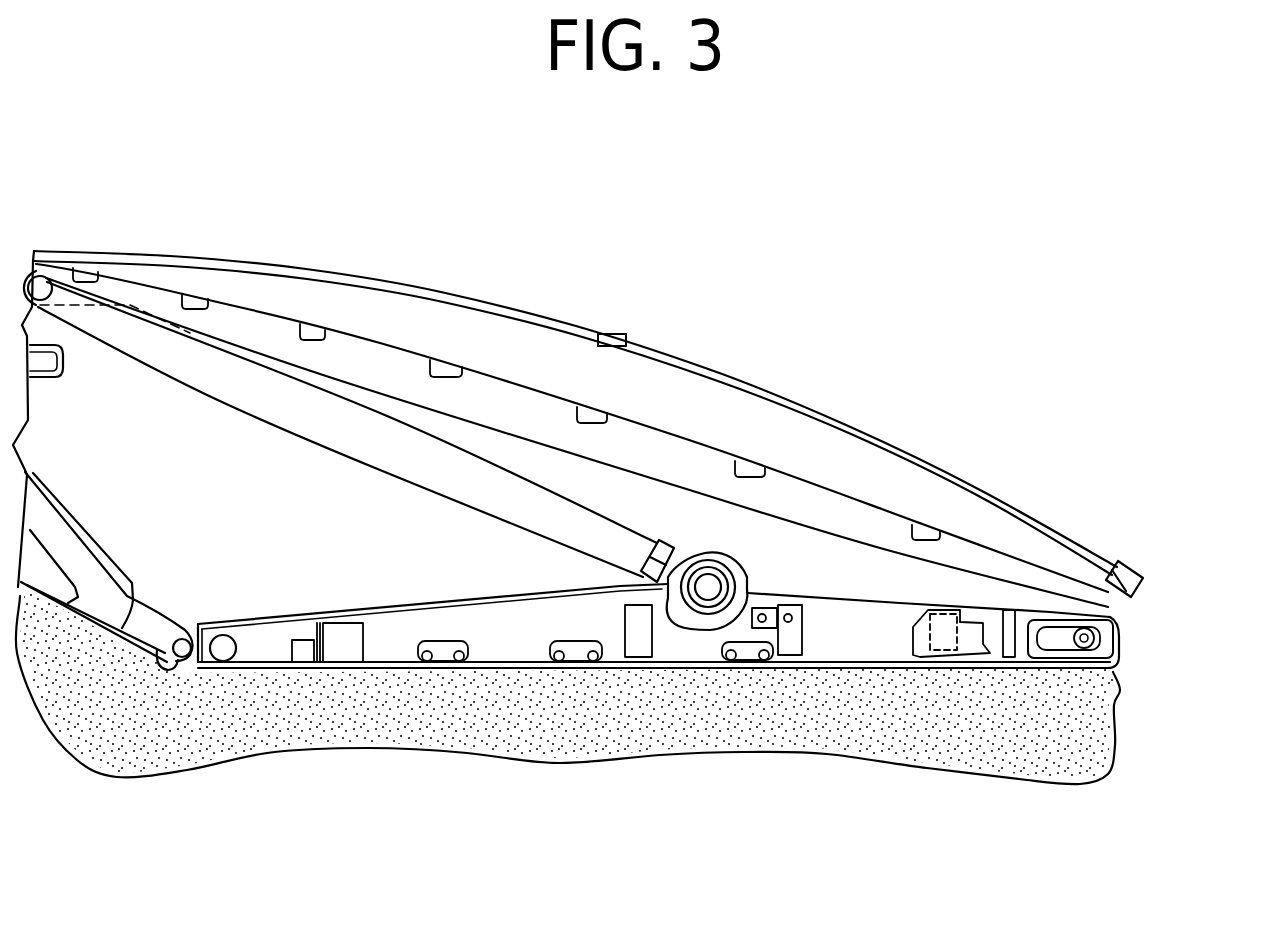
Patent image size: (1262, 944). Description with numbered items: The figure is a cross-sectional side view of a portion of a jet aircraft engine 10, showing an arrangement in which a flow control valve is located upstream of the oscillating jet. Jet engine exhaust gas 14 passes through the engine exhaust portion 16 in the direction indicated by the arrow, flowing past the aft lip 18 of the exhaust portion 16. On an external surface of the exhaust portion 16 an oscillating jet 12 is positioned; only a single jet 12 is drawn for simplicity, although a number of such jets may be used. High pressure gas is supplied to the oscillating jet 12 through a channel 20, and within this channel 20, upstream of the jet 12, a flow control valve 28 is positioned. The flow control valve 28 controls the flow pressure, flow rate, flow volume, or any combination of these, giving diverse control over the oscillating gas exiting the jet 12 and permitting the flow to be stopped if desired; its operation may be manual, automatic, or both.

The jet aircraft engine 10 is at (541, 262).
The oscillating jet 12 is at (1140, 566).
The jet engine exhaust gas 14 is at (943, 730).
The engine exhaust portion 16 is at (828, 668).
The aft lip 18 is at (1118, 652).
The channel 20 is at (817, 407).
The flow control valve 28 is at (612, 342).